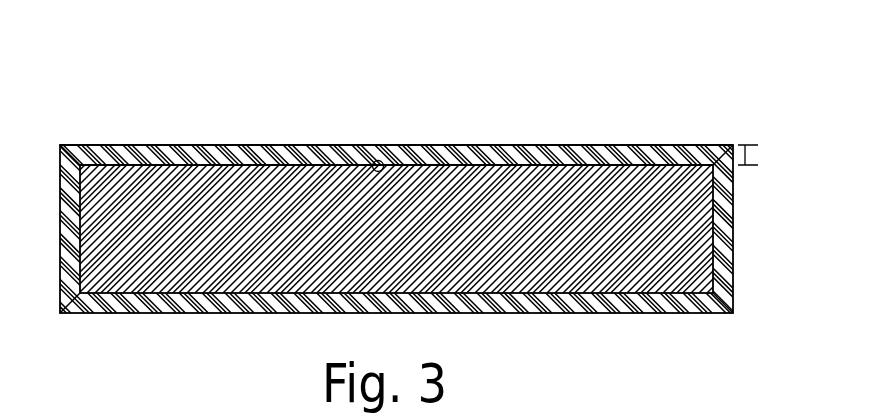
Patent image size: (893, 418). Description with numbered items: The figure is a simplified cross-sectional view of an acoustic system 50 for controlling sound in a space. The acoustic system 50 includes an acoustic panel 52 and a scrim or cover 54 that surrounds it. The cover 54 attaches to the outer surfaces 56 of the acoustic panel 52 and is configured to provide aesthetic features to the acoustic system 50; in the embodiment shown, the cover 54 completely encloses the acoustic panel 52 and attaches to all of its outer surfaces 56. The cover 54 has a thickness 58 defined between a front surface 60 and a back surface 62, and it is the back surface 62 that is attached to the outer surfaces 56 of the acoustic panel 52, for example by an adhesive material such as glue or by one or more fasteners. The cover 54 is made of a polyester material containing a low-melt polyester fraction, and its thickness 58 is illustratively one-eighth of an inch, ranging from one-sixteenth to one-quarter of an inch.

The acoustic system 50 is at (112, 76).
The acoustic panel 52 is at (131, 288).
The cover 54 is at (186, 152).
The outer surfaces 56 is at (620, 163).
The thickness 58 is at (746, 156).
The front surface 60 is at (271, 153).
The back surface 62 is at (379, 160).